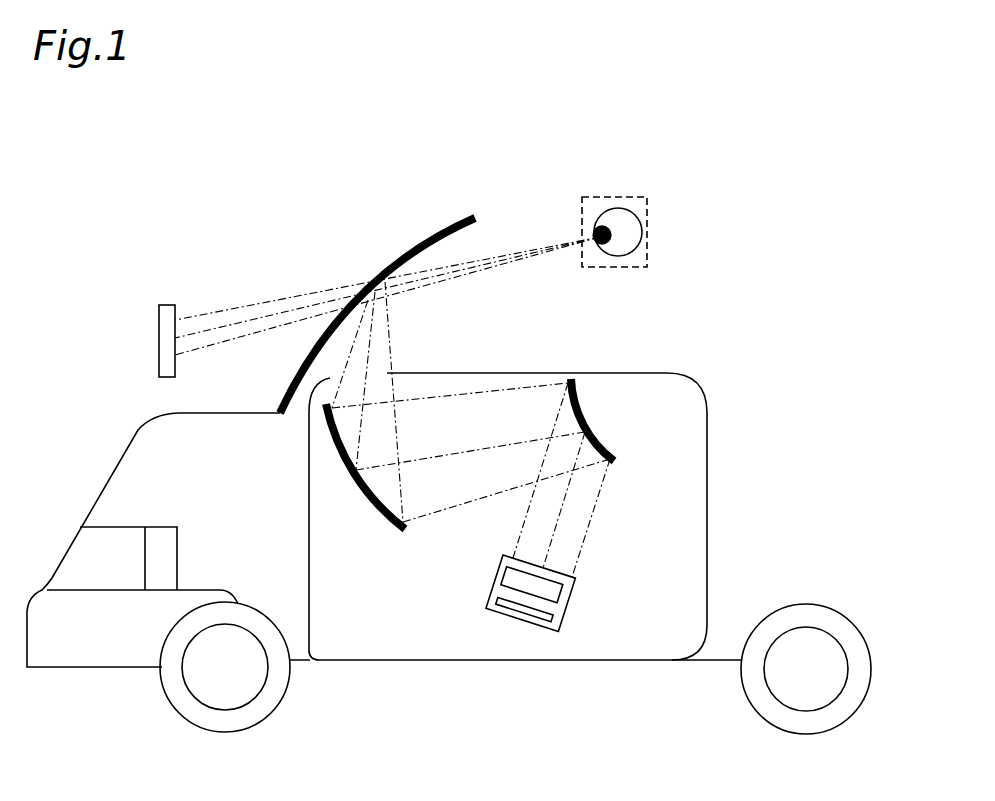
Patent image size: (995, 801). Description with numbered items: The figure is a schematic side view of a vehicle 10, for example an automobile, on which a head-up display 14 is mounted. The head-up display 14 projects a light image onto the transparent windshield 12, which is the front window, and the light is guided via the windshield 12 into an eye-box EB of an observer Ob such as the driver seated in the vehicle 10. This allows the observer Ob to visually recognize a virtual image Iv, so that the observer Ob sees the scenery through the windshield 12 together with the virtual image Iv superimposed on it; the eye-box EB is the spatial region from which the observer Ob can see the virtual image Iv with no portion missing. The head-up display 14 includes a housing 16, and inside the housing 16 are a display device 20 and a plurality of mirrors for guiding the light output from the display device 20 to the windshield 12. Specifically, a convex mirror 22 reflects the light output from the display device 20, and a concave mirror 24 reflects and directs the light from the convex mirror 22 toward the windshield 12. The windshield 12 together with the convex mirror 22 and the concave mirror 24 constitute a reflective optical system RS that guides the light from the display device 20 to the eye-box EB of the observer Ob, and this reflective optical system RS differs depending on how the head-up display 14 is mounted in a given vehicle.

The vehicle 10 is at (798, 247).
The windshield 12 is at (427, 247).
The head-up display 14 is at (658, 374).
The housing 16 is at (708, 524).
The display device 20 is at (502, 557).
The convex mirror 22 is at (593, 426).
The concave mirror 24 is at (366, 497).
The observer Ob is at (641, 224).
The eye-box EB is at (648, 258).
The virtual image Iv is at (157, 343).
The reflective optical system RS is at (482, 338).